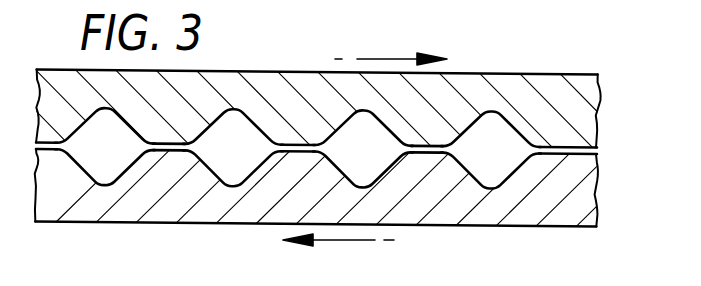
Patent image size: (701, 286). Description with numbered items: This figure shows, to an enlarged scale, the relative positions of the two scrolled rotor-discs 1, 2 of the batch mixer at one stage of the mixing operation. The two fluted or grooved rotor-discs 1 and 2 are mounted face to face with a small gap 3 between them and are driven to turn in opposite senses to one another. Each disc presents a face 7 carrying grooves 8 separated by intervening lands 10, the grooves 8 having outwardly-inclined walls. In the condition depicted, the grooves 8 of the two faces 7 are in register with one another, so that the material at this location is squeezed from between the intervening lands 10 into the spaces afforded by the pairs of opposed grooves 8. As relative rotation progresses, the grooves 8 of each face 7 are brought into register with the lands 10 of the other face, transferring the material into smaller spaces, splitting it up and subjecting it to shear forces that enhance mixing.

The rotor-disc 1 is at (532, 100).
The rotor-disc 2 is at (548, 197).
The gap 3 is at (560, 147).
The face 7 is at (89, 130).
The groove 8 is at (363, 128).
The land 10 is at (430, 137).